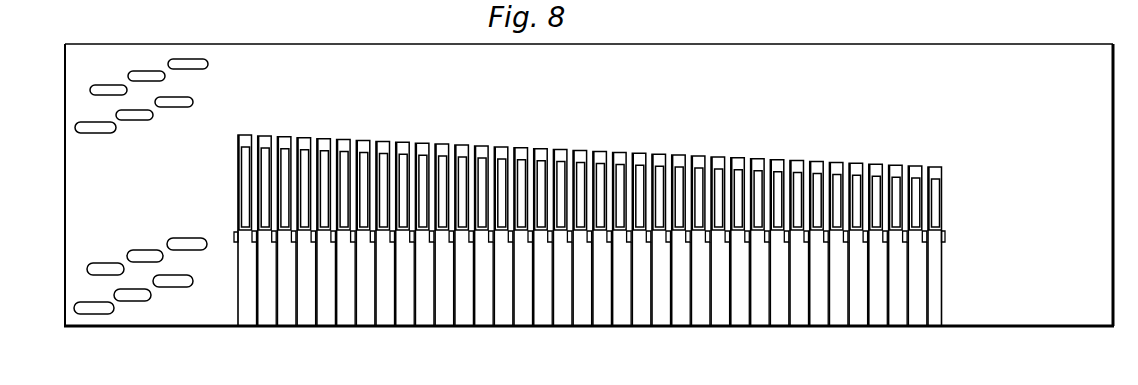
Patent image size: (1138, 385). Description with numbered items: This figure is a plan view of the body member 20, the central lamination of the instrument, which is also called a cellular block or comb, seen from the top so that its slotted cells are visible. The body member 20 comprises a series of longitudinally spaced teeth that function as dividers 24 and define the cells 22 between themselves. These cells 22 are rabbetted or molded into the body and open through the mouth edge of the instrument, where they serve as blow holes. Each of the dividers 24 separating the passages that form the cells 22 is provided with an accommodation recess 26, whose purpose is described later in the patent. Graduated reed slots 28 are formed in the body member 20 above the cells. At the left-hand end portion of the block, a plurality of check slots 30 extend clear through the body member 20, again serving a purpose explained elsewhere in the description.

The body member 20 is at (942, 57).
The cells 22 is at (758, 320).
The dividers 24 is at (925, 285).
The accommodation recesses 26 is at (887, 233).
The reed slots 28 is at (740, 160).
The check slots 30 is at (175, 108).